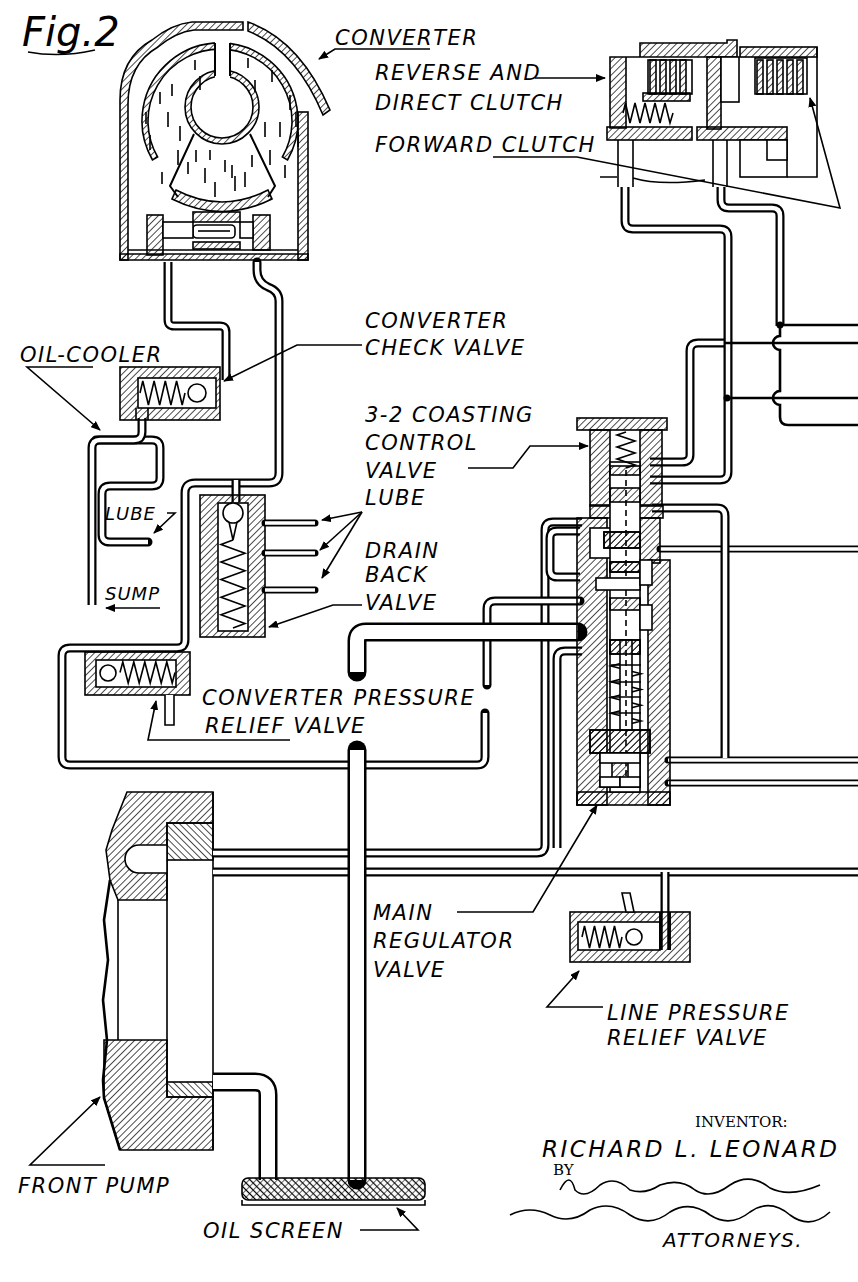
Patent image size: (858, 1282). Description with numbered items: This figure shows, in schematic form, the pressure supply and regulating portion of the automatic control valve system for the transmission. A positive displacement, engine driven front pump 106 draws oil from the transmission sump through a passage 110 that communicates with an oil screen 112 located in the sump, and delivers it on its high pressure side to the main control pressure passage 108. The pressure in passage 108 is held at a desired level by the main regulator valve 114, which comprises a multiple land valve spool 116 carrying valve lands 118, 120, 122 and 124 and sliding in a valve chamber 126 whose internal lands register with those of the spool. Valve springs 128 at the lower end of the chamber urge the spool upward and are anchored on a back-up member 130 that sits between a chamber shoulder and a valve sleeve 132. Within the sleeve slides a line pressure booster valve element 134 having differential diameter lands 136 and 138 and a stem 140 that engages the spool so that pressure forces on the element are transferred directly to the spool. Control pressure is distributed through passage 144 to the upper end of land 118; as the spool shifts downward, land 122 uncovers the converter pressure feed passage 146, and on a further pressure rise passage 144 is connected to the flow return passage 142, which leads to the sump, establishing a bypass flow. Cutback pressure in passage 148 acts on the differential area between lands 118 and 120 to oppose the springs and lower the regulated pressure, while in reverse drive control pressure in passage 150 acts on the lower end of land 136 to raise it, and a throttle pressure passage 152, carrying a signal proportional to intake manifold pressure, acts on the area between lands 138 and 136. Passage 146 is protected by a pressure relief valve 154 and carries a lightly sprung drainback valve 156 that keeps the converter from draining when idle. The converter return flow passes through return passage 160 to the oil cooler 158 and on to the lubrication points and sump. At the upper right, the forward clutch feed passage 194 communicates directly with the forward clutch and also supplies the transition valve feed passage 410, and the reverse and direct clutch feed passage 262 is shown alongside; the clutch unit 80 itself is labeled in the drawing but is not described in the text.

The clutch assembly (reverse/direct and forward clutch) 80 is at (838, 50).
The front pump 106 is at (220, 935).
The main control pressure passage 108 is at (283, 848).
The passage 110 is at (279, 1141).
The oil screen 112 is at (416, 1178).
The main regulator valve 114 is at (585, 662).
The multiple land valve spool 116 is at (572, 585).
The valve land 118 is at (578, 542).
The valve land 120 is at (650, 580).
The valve land 122 is at (648, 618).
The valve land 124 is at (645, 660).
The valve chamber 126 is at (567, 577).
The valve springs 128 is at (642, 712).
The back-up member 130 is at (645, 736).
The valve sleeve 132 is at (660, 802).
The line pressure booster valve element 134 is at (585, 763).
The differential diameter land 136 is at (603, 802).
The differential diameter land 138 is at (598, 755).
The stem 140 is at (645, 690).
The flow return passage 142 is at (348, 672).
The passage 144 is at (540, 522).
The converter pressure feed passage 146 is at (70, 765).
The cutback pressure passage 148 is at (835, 538).
The passage 150 is at (818, 788).
The throttle pressure passage 152 is at (830, 748).
The pressure relief valve 154 is at (114, 690).
The drainback valve 156 is at (235, 505).
The oil cooler 158 is at (95, 460).
The return passage 160 is at (165, 290).
The forward clutch feed passage 194 is at (782, 264).
The reverse and direct clutch feed passage 262 is at (822, 398).
The pressure feed passage for the transition valve 410 is at (827, 313).